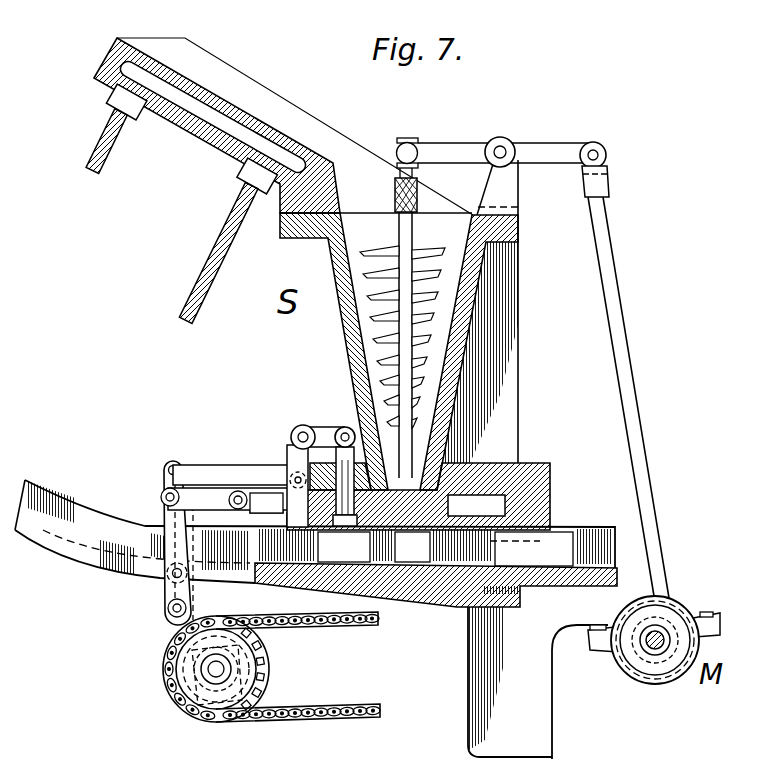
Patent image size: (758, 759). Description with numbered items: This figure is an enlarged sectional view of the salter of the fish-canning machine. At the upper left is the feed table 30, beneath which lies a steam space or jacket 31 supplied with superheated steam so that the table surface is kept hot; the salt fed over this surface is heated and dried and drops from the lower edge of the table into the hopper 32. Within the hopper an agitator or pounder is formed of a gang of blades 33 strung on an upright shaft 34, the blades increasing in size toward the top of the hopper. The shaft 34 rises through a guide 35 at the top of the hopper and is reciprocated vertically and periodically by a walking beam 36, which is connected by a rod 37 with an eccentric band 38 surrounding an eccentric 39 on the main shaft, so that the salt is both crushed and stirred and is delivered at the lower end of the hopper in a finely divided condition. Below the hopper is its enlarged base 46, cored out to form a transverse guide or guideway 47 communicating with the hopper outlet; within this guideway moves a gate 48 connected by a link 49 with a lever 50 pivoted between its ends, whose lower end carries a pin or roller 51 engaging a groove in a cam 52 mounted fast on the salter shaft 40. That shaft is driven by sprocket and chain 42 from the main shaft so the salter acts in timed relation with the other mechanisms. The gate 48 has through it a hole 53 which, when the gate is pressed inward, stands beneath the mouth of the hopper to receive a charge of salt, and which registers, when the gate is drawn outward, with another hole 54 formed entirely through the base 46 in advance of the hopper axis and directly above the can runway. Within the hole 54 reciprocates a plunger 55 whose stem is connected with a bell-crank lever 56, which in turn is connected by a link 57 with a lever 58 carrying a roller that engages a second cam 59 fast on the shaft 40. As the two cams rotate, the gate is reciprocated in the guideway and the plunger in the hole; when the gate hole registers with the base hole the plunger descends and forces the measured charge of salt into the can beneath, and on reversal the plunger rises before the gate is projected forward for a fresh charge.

The feed table 30 is at (243, 112).
The steam space or jacket 31 is at (198, 115).
The hopper 32 is at (350, 257).
The blades 33 is at (376, 275).
The upright shaft 34 is at (413, 232).
The guide 35 is at (395, 190).
The walking beam 36 is at (528, 147).
The rod 37 is at (623, 307).
The eccentric band 38 is at (693, 615).
The eccentric 39 is at (667, 610).
The salter shaft 40 is at (213, 673).
The chain 42 is at (340, 707).
The enlarged base 46 is at (550, 483).
The transverse guide or guideway 47 is at (493, 508).
The gate 48 is at (518, 457).
The link 49 is at (160, 497).
The lever 50 is at (165, 585).
The pin or roller 51 is at (182, 668).
The cam 52 is at (172, 698).
The hole 53 is at (358, 492).
The hole 54 is at (348, 517).
The plunger 55 is at (333, 455).
The bell-crank lever 56 is at (350, 432).
The link 57 is at (252, 470).
The lever 58 is at (168, 468).
The cam 59 is at (265, 660).